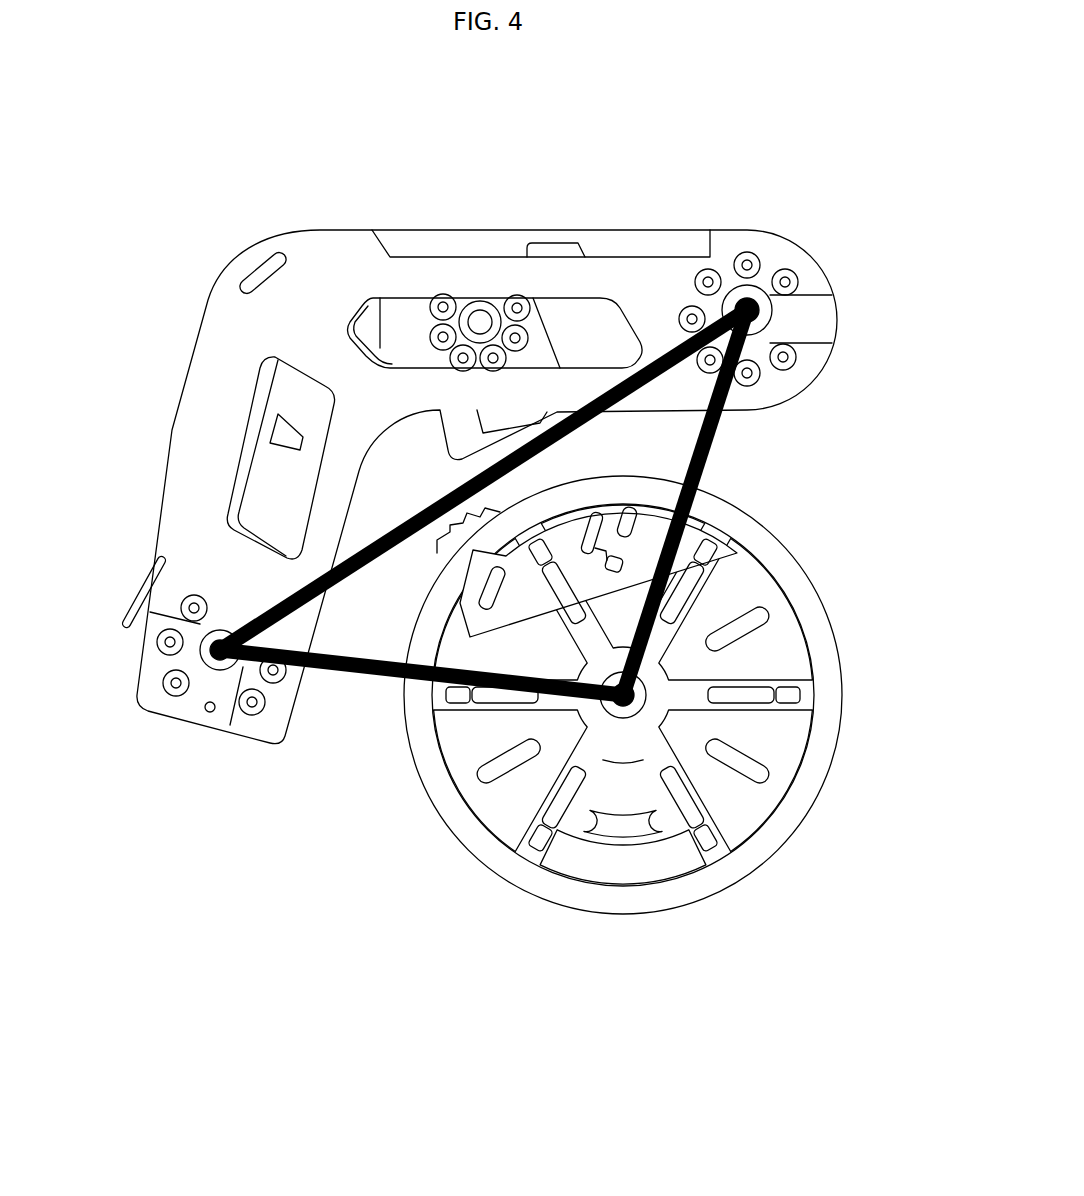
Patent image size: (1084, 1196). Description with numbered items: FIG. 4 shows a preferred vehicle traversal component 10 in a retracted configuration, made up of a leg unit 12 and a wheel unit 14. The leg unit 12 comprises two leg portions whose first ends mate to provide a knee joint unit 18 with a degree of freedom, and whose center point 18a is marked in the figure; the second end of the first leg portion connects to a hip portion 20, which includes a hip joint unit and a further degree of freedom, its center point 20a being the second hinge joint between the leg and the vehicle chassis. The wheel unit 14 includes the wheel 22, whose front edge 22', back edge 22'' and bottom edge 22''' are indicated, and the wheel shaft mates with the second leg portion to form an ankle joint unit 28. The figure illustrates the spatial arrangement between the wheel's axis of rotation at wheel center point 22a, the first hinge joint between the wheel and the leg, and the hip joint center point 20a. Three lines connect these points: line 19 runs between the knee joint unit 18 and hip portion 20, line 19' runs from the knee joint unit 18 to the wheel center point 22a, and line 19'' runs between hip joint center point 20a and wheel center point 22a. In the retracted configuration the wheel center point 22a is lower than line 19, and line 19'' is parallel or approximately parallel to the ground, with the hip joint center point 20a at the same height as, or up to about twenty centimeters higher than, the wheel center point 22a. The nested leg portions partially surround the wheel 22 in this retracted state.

The vehicle traversal component 10 is at (866, 548).
The leg unit 12 is at (176, 214).
The wheel unit 14 is at (441, 866).
The knee joint unit 18 is at (822, 302).
The center point of the knee joint unit 18a is at (770, 322).
The line between knee and hip joint units 19 is at (422, 480).
The link bar 19' is at (717, 502).
The line between hip joint unit center point and wheel center point 19'' is at (421, 728).
The hip portion 20 is at (207, 688).
The hip joint unit center point 20a is at (200, 648).
The wheel 22 is at (659, 695).
The wheel front edge 22' is at (684, 695).
The wheel back edge 22'' is at (535, 634).
The wheel bottom edge 22''' is at (623, 872).
The wheel center point 22a is at (680, 665).
The ankle joint unit 28 is at (660, 230).